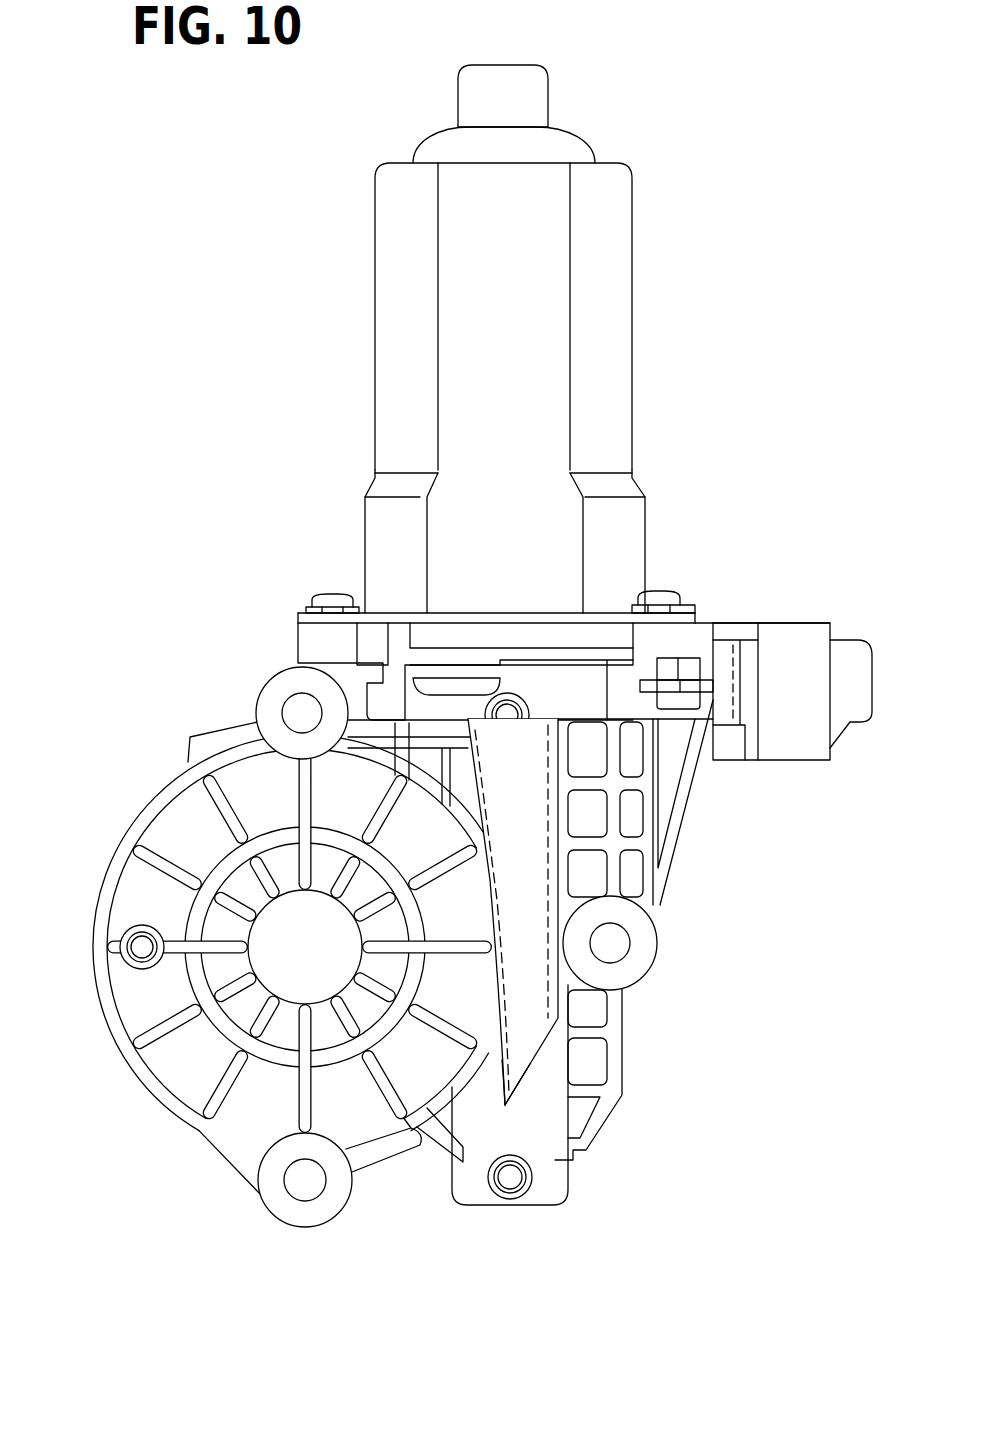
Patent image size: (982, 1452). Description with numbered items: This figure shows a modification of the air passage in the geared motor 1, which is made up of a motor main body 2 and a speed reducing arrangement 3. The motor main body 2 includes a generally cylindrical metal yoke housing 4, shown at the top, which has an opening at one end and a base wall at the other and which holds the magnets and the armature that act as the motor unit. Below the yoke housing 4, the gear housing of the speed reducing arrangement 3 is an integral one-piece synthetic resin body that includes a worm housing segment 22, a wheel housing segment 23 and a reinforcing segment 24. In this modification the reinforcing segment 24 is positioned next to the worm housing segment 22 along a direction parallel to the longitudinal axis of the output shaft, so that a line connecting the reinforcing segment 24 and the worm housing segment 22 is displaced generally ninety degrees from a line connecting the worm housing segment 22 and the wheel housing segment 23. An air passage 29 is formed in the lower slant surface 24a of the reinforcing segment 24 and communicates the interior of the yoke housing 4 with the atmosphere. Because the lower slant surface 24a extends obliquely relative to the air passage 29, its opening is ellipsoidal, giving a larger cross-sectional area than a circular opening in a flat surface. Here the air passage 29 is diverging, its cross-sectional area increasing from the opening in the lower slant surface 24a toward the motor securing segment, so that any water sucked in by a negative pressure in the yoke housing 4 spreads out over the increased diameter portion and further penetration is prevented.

The geared motor 1 is at (585, 412).
The motor main body 2 is at (671, 416).
The speed reducing arrangement 3 is at (585, 610).
The yoke housing 4 is at (632, 243).
The worm housing segment 22 is at (572, 1184).
The wheel housing segment 23 is at (123, 1007).
The reinforcing segment 24 is at (523, 928).
The lower slant surface 24a is at (543, 1069).
The air passage 29 is at (490, 835).